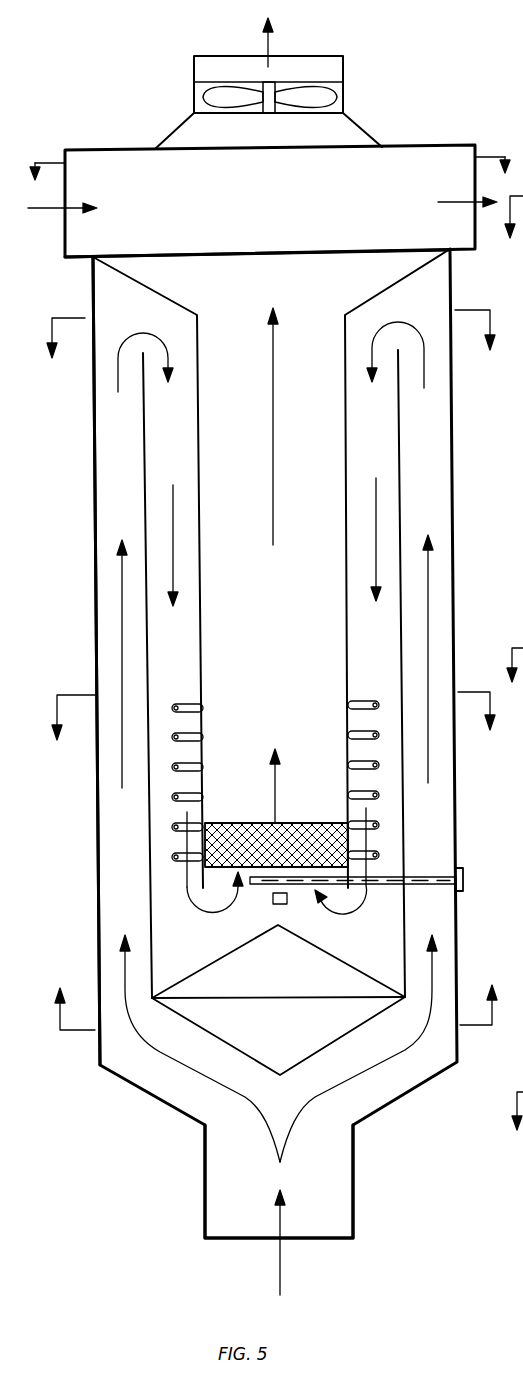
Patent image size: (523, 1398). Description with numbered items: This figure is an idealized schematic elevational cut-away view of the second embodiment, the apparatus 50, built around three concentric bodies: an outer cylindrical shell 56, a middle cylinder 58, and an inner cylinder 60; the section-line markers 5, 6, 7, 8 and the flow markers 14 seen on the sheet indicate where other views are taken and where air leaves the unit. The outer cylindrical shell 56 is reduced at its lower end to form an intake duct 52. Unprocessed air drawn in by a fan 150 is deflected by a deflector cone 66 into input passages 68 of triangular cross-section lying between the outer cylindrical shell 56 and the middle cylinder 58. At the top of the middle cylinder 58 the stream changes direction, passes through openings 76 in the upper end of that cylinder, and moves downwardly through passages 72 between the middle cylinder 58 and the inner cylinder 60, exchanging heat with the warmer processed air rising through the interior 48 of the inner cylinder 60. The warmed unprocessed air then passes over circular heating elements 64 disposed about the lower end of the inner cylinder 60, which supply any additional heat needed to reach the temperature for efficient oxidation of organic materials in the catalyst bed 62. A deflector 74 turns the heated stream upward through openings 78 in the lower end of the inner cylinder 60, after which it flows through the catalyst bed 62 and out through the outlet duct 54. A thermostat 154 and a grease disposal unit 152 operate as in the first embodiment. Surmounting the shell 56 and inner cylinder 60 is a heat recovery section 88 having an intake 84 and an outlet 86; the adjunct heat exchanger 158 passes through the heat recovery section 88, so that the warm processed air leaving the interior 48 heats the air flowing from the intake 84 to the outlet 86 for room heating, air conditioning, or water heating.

The apparatus 50 is at (474, 457).
The intake duct 52 is at (340, 1239).
The outlet duct 54 is at (305, 57).
The fan 150 is at (213, 95).
The intake 84 is at (63, 162).
The outlet 86 is at (478, 150).
The outlet air flow 14 is at (266, 195).
The heat recovery section 88 is at (300, 284).
The adjunct heat exchanger 158 is at (204, 257).
The openings 76 is at (155, 315).
The inner cylinder 60 is at (200, 447).
The middle cylinder 58 is at (143, 450).
The passages 72 is at (185, 657).
The input passages 68 is at (445, 825).
The interior 48 is at (292, 651).
The outer cylindrical shell 56 is at (97, 838).
The circular heating elements 64 is at (362, 700).
The catalyst bed 62 is at (302, 823).
The openings 78 is at (215, 927).
The grease disposal unit 152 is at (466, 878).
The thermostat 154 is at (289, 903).
The deflector 74 is at (322, 950).
The deflector cone 66 is at (277, 1063).
The section line 5- 5 is at (514, 678).
The section line 6- 6 is at (271, 351).
The section line 7- 7 is at (275, 993).
The section line 8- 8 is at (273, 729).